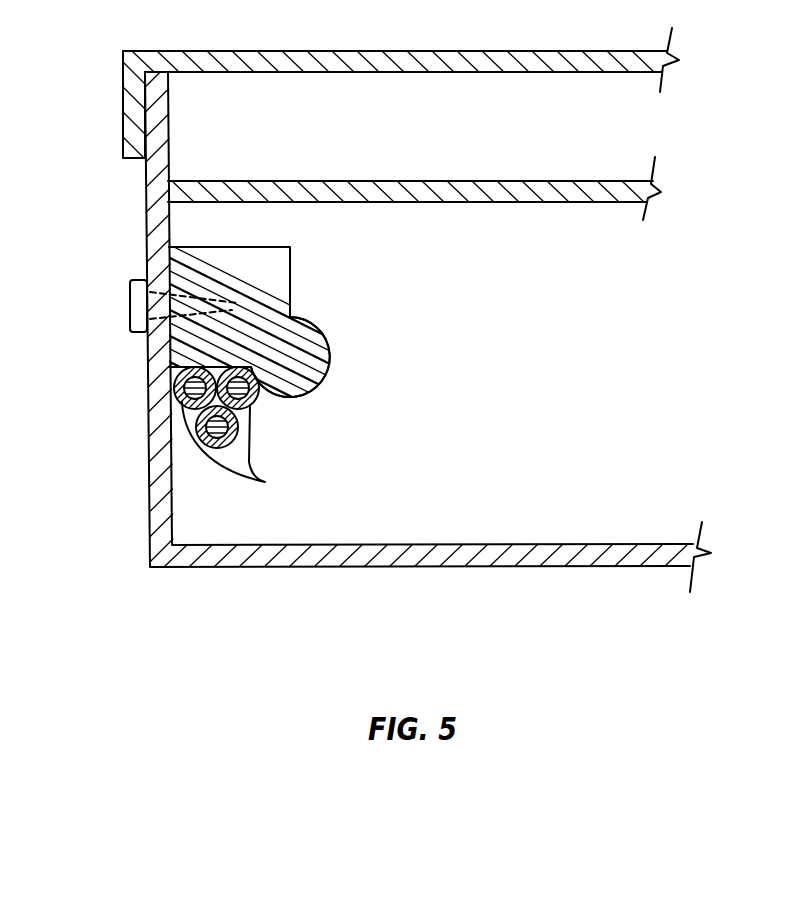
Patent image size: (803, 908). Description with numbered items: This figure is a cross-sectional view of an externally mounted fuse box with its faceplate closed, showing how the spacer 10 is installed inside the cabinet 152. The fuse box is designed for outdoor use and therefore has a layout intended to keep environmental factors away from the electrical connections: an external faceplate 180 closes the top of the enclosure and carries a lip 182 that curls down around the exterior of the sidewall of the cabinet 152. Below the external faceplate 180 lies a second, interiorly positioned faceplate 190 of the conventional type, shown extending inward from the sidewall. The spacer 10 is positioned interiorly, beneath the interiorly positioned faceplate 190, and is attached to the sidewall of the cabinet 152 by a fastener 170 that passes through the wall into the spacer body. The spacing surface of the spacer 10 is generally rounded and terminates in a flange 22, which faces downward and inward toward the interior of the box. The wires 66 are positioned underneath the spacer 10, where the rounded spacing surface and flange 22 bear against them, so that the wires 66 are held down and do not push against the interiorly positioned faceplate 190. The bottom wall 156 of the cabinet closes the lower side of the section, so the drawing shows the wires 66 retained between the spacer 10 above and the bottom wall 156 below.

The spacer 10 is at (325, 313).
The flange 22 is at (318, 372).
The wires 66 is at (236, 421).
The cabinet 152 is at (149, 489).
The bottom plate 156 is at (497, 546).
The fastener 170 is at (129, 305).
The external faceplate 180 is at (432, 50).
The lip 182 is at (126, 117).
The interiorly positioned faceplate 190 is at (432, 181).